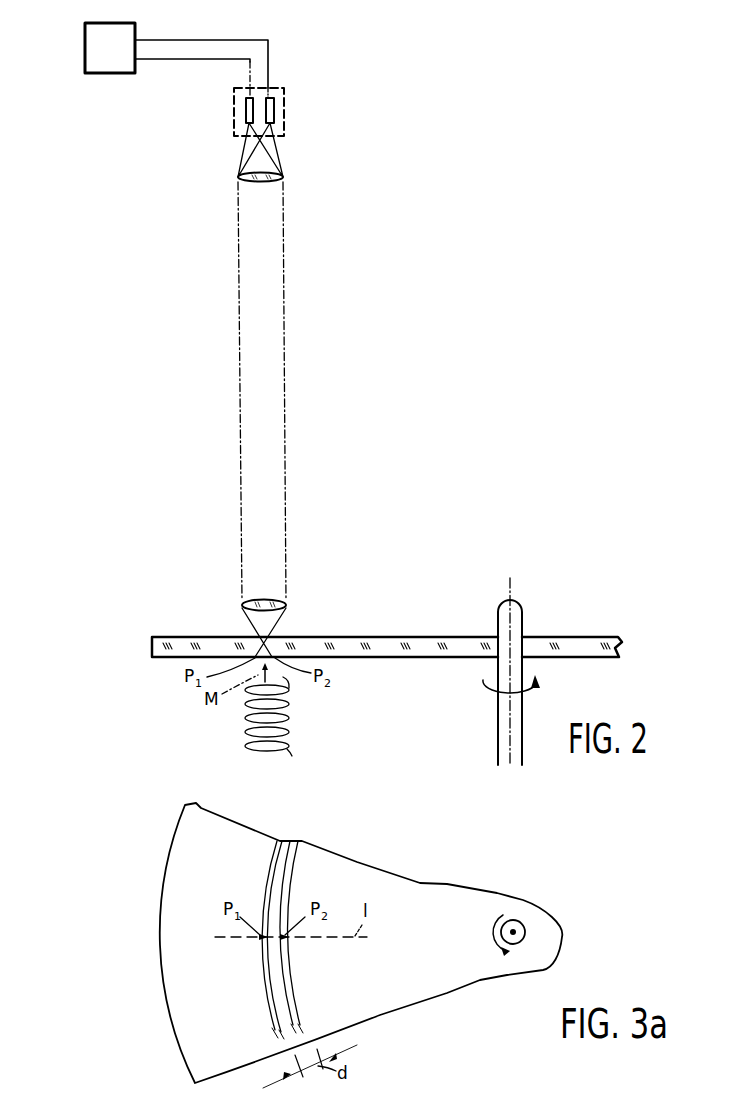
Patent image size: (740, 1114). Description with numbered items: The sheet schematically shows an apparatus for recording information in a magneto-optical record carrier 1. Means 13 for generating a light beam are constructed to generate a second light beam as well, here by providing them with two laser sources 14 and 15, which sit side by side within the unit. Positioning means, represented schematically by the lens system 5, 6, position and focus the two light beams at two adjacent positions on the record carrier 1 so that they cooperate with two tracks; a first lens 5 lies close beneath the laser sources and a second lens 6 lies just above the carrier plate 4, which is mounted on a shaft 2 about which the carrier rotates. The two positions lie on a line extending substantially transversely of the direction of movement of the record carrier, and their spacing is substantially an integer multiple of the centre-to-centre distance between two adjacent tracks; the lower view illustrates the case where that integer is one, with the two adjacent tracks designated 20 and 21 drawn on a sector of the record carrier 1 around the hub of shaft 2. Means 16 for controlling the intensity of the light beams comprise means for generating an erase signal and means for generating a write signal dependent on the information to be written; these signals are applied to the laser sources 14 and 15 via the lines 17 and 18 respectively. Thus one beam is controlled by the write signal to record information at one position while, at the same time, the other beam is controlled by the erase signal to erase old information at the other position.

In FIG. 2, the magneto-optical record carrier 1 is at (568, 640).
In FIG. 3a, the magneto-optical record carrier 1 is at (166, 858).
In FIG. 2, the shaft 2 is at (510, 735).
In FIG. 3a, the shaft 2 is at (516, 930).
In FIG. 2, the record carrier plate 4 is at (196, 638).
In FIG. 2, the lens 5 is at (240, 175).
In FIG. 2, the lens 6 is at (287, 603).
In FIG. 2, the means for generating a light beam 13 is at (286, 97).
In FIG. 2, the laser source 14 is at (273, 115).
In FIG. 2, the laser source 15 is at (246, 110).
In FIG. 2, the means for controlling the intensity of the light beam 16 is at (110, 76).
In FIG. 2, the line 17 is at (162, 40).
In FIG. 2, the line 18 is at (162, 62).
In FIG. 3a, the track 20 is at (270, 863).
In FIG. 3a, the track 21 is at (294, 867).